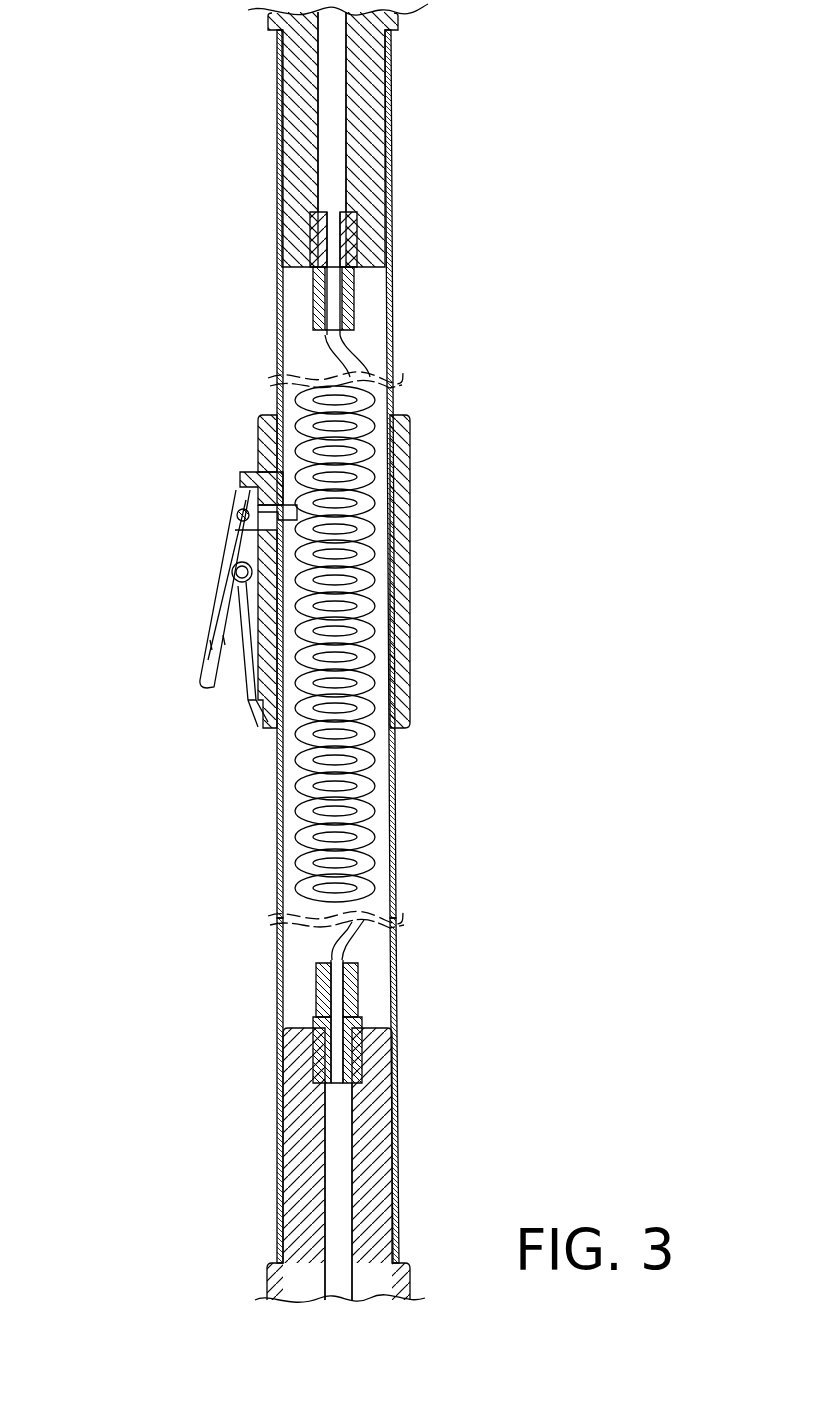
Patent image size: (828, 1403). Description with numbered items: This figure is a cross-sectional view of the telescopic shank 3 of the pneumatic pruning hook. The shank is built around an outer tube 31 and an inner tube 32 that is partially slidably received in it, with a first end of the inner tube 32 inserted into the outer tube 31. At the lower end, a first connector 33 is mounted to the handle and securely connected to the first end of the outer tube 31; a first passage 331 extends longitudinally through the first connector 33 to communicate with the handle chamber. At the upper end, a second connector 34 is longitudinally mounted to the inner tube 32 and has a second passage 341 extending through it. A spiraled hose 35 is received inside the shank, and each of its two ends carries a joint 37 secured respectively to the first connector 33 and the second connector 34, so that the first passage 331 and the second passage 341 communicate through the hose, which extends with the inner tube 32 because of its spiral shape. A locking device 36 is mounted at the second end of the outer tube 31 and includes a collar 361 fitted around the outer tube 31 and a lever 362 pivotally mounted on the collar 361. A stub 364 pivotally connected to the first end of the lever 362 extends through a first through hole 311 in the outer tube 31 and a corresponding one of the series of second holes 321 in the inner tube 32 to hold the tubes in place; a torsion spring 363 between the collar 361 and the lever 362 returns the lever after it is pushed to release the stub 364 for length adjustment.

The telescopic shank 3 is at (285, 653).
The outer tube 31 is at (277, 1018).
The first through hole 311 is at (275, 518).
The inner tube 32 is at (290, 237).
The second holes 321 is at (290, 512).
The first connector 33 is at (377, 1153).
The first passage 331 is at (337, 1190).
The second connector 34 is at (302, 108).
The second passage 341 is at (327, 155).
The spiraled hose 35 is at (360, 733).
The locking device 36 is at (166, 636).
The collar 361 is at (263, 457).
The lever 362 is at (210, 657).
The torsion spring 363 is at (220, 617).
The stub 364 is at (292, 517).
The joint 37 is at (300, 302).